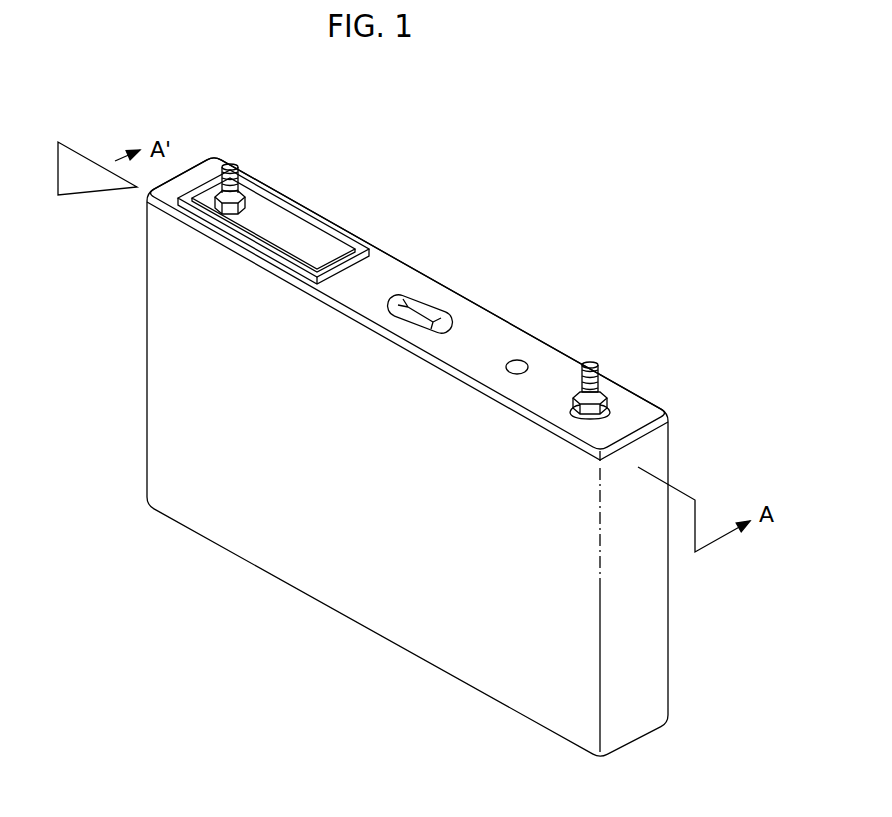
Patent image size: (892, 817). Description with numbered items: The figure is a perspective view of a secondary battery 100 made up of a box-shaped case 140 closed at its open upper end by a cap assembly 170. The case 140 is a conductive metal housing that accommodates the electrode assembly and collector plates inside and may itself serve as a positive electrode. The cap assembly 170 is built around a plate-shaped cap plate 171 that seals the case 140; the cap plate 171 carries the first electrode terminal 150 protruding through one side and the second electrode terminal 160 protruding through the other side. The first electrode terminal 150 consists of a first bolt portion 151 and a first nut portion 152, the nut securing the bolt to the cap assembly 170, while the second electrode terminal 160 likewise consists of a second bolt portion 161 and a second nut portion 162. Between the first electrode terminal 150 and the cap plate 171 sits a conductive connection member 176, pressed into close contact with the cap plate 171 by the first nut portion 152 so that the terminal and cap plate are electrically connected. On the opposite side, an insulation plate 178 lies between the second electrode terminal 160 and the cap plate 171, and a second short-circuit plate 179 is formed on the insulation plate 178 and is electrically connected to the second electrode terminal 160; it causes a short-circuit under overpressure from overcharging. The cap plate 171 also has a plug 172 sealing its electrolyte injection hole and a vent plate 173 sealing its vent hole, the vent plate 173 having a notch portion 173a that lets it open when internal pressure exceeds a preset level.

The secondary battery 100 is at (772, 121).
The case 140 is at (363, 597).
The first electrode terminal 150 is at (591, 361).
The first bolt portion 151 is at (598, 378).
The first nut portion 152 is at (606, 397).
The second electrode terminal 160 is at (235, 163).
The second bolt portion 161 is at (293, 202).
The second nut portion 162 is at (220, 210).
The cap assembly 170 is at (506, 317).
The cap plate 171 is at (380, 273).
The plug 172 is at (519, 361).
The vent plate 173 is at (464, 277).
The notch portion 173a is at (437, 312).
The connection member 176 is at (613, 411).
The insulation plate 178 is at (337, 235).
The second short-circuit plate 179 is at (300, 235).